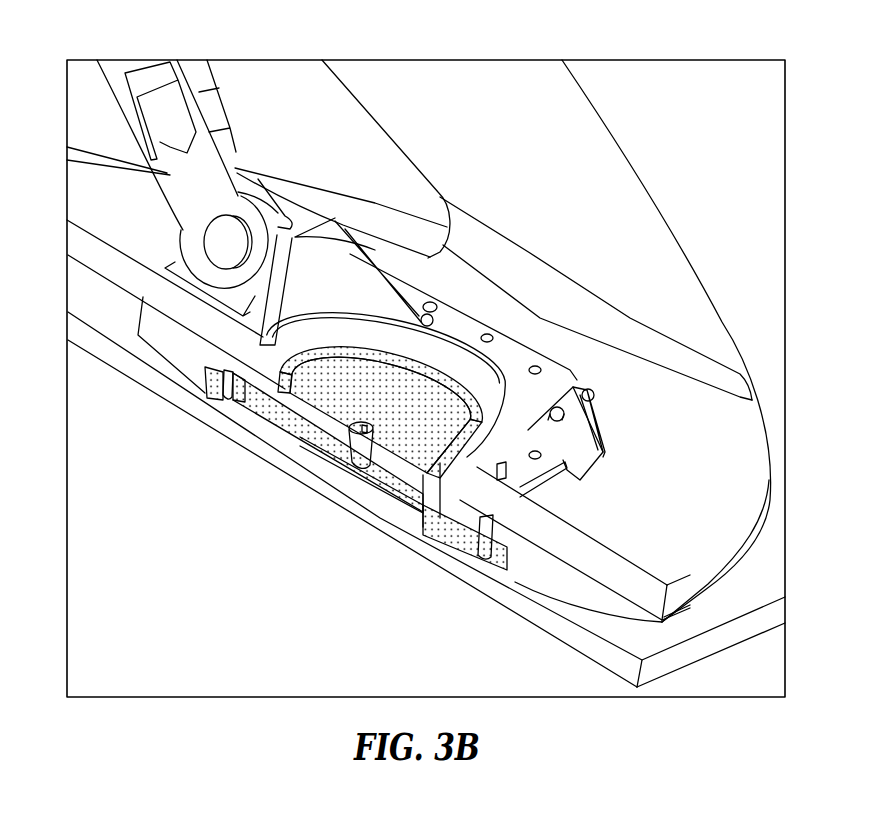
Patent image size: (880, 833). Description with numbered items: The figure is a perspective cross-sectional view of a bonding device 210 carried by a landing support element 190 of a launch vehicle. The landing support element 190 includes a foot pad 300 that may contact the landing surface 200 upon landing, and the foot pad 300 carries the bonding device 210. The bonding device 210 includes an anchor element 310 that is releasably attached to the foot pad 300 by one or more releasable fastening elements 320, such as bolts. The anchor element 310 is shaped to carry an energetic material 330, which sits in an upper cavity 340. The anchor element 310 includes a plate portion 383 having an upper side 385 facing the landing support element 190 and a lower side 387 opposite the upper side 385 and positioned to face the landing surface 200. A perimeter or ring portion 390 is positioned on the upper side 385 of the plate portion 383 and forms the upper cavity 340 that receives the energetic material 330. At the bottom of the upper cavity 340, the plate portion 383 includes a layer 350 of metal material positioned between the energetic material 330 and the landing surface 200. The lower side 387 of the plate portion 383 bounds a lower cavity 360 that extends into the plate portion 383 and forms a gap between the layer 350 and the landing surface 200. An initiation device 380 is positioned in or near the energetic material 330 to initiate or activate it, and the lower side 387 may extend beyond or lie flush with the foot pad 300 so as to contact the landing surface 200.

The landing support element 190 is at (597, 158).
The landing surface 200 is at (110, 350).
The bonding device 210 is at (500, 372).
The foot pad 300 is at (572, 578).
The anchor element 310 is at (325, 373).
The releasable fastening elements 320 is at (200, 423).
The energetic material 330 is at (409, 493).
The upper cavity 340 is at (378, 383).
The layer of metal material 350 is at (293, 463).
The lower cavity 360 is at (320, 487).
The initiation device 380 is at (358, 458).
The plate portion 383 is at (448, 540).
The upper side 385 is at (233, 403).
The lower side 387 is at (247, 450).
The ring portion 390 is at (467, 390).